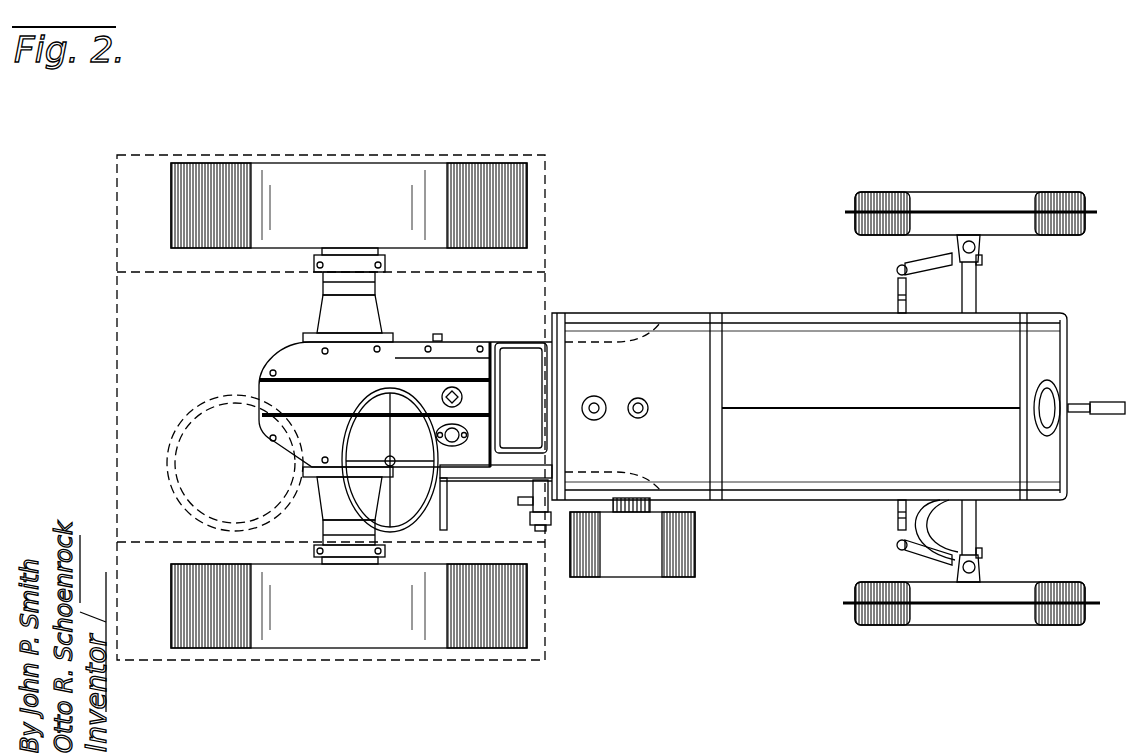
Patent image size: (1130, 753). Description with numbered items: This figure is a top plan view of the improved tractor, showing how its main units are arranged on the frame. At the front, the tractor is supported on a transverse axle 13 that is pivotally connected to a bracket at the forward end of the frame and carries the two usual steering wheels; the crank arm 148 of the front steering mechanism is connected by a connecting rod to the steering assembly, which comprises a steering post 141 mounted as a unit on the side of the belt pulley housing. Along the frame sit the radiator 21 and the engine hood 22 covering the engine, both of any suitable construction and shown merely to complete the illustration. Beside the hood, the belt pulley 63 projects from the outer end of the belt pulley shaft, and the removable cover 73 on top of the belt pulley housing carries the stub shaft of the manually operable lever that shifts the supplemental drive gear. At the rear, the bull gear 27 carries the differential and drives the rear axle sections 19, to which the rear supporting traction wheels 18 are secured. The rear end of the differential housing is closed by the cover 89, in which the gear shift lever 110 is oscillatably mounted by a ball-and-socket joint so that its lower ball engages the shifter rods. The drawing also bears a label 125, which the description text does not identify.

The rear supporting traction wheels 18 is at (286, 175).
The rear axle sections 19 is at (325, 308).
The cover or housing 89 is at (410, 350).
The removable cover 73 is at (527, 362).
The engine hood 22 is at (823, 337).
The radiator 21 is at (1057, 366).
The bull gear 27 is at (906, 195).
The transverse axle 13 is at (978, 541).
The crank arm 148 is at (925, 531).
The steering post 141 is at (530, 470).
The gear shift lever 110 is at (453, 441).
The steering wheel 125 is at (412, 525).
The belt pulley 63 is at (651, 565).